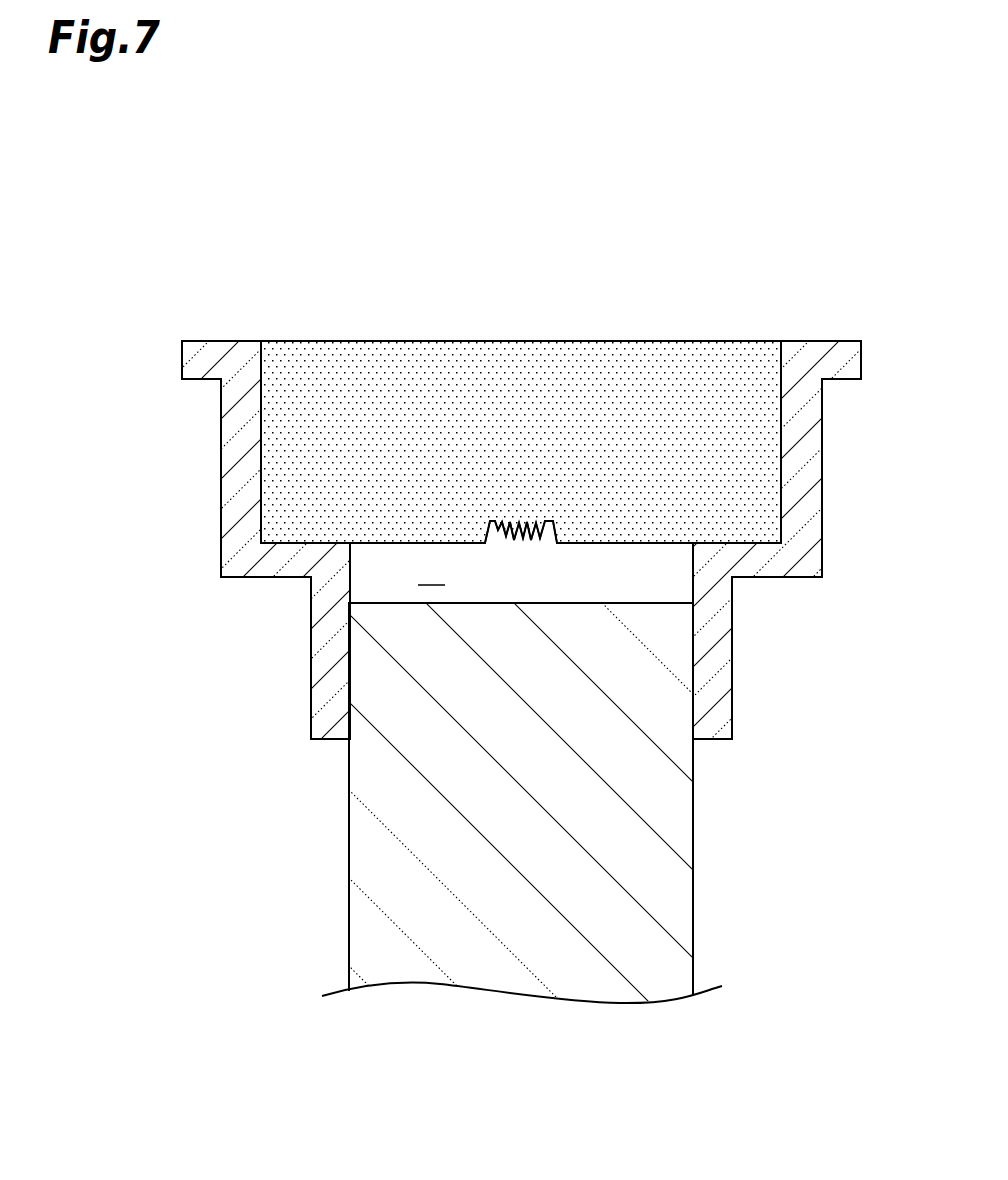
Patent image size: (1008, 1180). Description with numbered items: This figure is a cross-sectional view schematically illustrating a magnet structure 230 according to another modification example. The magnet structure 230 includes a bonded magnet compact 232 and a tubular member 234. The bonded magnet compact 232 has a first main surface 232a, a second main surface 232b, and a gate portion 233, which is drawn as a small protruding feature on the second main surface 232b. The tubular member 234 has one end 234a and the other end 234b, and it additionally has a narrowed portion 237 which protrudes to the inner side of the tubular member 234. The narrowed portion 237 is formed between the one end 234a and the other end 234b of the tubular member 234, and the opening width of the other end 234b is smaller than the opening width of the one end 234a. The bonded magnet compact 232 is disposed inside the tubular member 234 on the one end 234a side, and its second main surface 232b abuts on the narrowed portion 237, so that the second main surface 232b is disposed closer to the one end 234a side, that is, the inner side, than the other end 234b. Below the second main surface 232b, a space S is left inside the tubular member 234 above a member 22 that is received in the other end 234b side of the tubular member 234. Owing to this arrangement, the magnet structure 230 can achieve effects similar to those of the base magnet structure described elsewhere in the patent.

The magnet structure 230 is at (776, 211).
The bonded magnet compact 232 is at (636, 339).
The first main surface 232a is at (428, 340).
The second main surface 232b is at (400, 543).
The gate portion 233 is at (550, 547).
The tubular member 234 is at (237, 462).
The one end 234a is at (263, 350).
The other end 234b is at (352, 729).
The narrowed portion 237 is at (292, 558).
The space S is at (521, 573).
The substrate / base member 22 is at (668, 907).